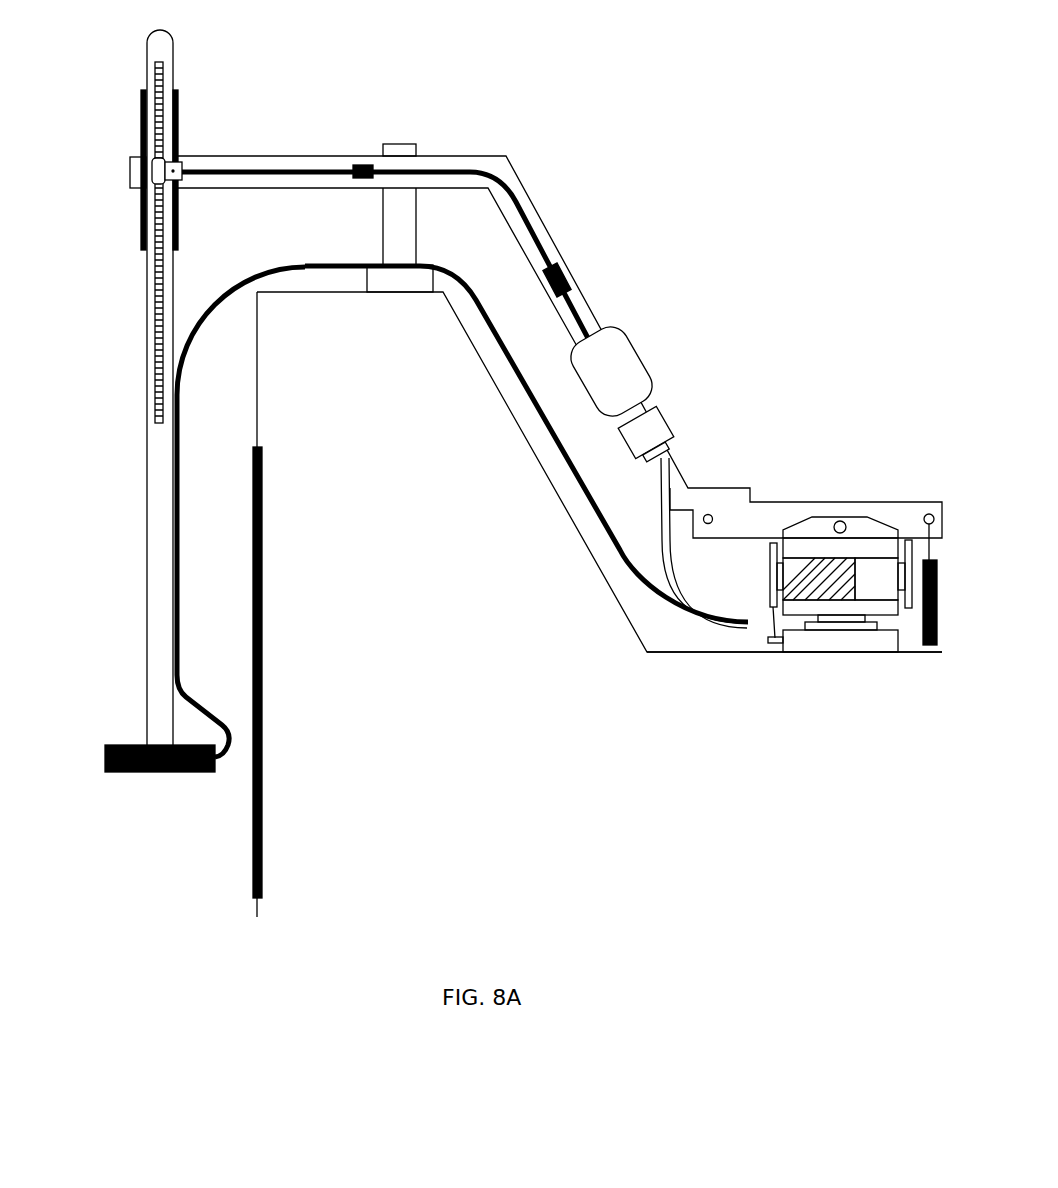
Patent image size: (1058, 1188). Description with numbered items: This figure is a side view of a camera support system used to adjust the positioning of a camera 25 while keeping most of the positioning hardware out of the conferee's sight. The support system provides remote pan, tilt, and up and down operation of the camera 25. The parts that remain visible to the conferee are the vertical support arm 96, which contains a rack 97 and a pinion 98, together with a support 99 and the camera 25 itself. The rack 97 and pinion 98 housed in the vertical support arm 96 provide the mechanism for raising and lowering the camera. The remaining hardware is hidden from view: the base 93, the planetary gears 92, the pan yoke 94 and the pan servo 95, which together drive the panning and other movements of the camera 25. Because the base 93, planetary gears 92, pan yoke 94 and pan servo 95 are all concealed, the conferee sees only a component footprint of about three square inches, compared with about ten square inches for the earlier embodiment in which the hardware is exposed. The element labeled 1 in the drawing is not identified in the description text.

The vertical support arm 96 is at (146, 42).
The rack 97 is at (165, 73).
The pinion 98 is at (166, 155).
The support 99 is at (383, 225).
The planetary gears 92 is at (577, 393).
The probe 1 is at (625, 443).
The pan yoke 94 is at (773, 543).
The pan servo 95 is at (819, 558).
The base 93 is at (840, 652).
The camera 25 is at (104, 758).